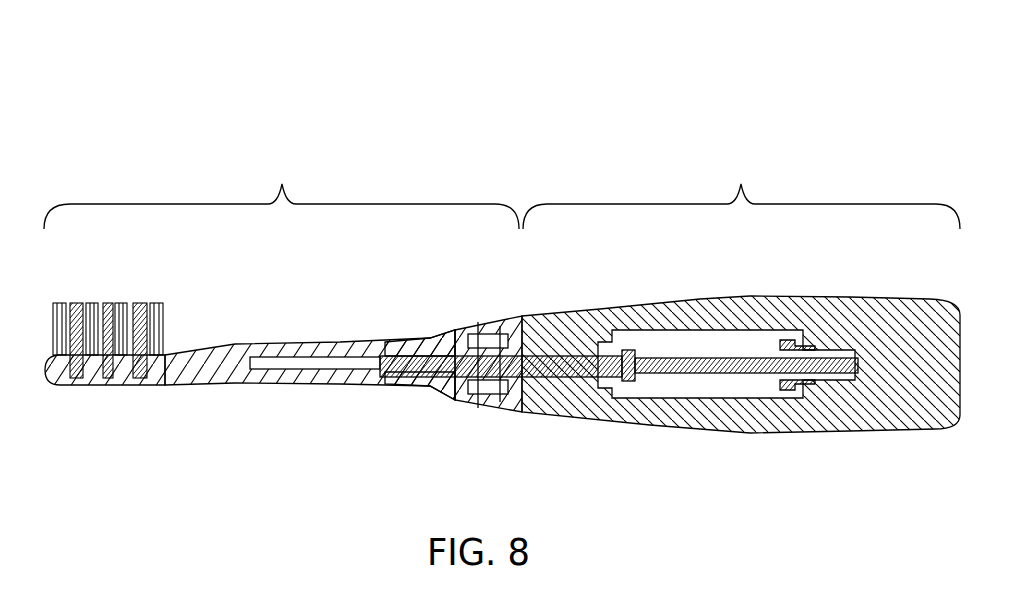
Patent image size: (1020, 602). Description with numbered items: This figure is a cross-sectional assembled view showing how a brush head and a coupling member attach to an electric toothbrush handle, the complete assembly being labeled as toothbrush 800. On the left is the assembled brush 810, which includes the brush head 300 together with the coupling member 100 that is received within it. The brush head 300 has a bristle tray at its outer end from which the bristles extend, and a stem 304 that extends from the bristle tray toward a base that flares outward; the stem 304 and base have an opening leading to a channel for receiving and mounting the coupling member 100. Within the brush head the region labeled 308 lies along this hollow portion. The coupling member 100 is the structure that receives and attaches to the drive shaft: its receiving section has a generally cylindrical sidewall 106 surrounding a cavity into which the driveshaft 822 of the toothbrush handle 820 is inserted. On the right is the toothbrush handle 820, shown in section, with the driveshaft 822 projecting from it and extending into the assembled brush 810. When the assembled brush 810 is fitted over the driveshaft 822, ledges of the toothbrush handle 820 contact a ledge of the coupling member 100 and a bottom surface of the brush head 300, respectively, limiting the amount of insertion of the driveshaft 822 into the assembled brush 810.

The electric toothbrush 800 is at (110, 103).
The assembled brush 810 is at (281, 188).
The toothbrush handle 820 is at (741, 188).
The brush head 300 is at (160, 378).
The stem 304 is at (233, 343).
The channel 308 is at (353, 368).
The driveshaft 822 is at (414, 372).
The sidewall 106 is at (422, 343).
The coupling member 100 is at (510, 400).